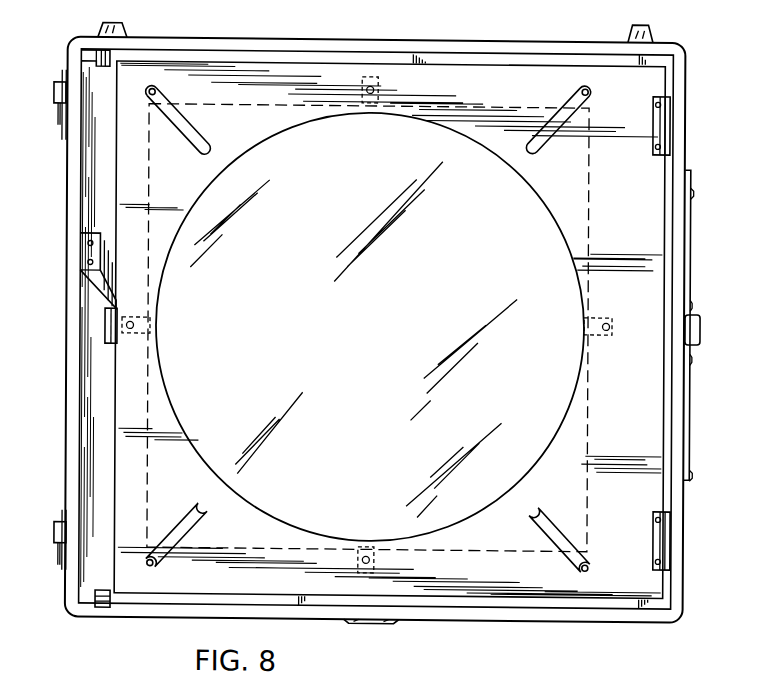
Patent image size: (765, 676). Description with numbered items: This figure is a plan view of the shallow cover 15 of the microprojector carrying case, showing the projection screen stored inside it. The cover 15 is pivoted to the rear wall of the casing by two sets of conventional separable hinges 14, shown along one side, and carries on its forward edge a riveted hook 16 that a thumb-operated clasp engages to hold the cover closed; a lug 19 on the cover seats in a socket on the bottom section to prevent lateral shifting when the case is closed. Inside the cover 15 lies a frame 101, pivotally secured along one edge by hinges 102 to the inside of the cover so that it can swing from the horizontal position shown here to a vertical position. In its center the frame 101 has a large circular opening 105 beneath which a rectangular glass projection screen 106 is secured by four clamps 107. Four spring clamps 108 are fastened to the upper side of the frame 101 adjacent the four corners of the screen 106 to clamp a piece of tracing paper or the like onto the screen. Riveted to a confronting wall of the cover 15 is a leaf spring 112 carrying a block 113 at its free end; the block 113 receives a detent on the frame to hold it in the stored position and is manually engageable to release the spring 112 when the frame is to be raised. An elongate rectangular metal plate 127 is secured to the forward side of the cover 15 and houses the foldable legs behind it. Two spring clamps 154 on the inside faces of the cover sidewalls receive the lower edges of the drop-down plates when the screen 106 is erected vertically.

The separable hinges 14 is at (53, 98).
The cover 15 is at (426, 39).
The hook 16 is at (700, 325).
The lug 19 is at (372, 624).
The frame 101 is at (652, 175).
The hinges 102 is at (651, 109).
The circular opening 105 is at (178, 420).
The glass projection screen 106 is at (386, 337).
The clamps 107 is at (378, 88).
The spring clamps 108 is at (183, 126).
The leaf spring 112 is at (106, 288).
The block 113 is at (104, 340).
The metal plate 127 is at (692, 415).
The spring clamps 154 is at (100, 69).